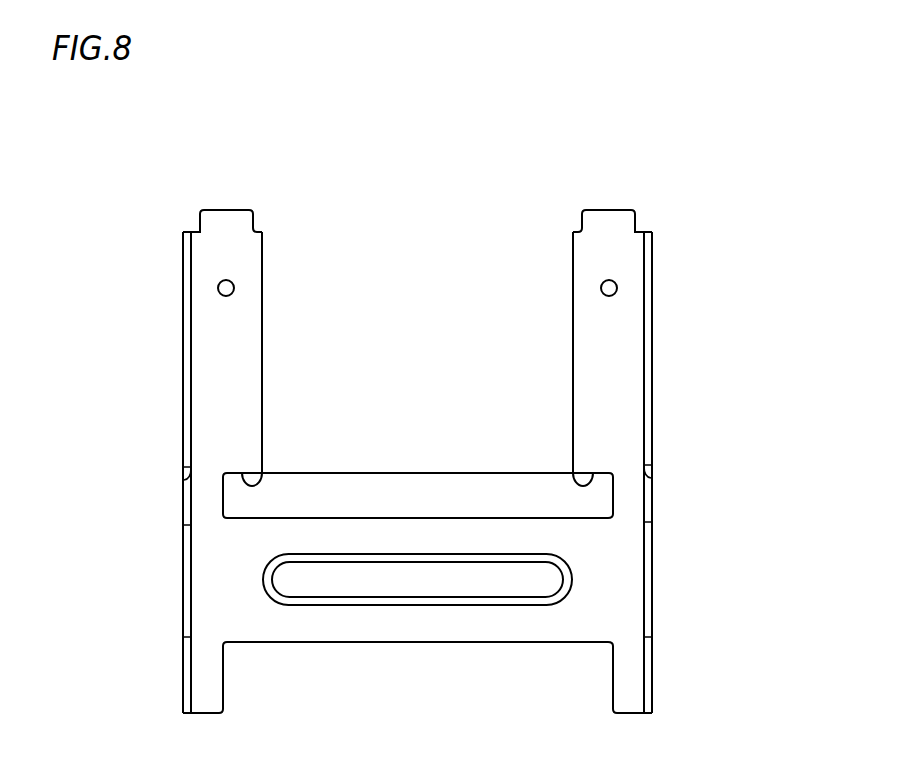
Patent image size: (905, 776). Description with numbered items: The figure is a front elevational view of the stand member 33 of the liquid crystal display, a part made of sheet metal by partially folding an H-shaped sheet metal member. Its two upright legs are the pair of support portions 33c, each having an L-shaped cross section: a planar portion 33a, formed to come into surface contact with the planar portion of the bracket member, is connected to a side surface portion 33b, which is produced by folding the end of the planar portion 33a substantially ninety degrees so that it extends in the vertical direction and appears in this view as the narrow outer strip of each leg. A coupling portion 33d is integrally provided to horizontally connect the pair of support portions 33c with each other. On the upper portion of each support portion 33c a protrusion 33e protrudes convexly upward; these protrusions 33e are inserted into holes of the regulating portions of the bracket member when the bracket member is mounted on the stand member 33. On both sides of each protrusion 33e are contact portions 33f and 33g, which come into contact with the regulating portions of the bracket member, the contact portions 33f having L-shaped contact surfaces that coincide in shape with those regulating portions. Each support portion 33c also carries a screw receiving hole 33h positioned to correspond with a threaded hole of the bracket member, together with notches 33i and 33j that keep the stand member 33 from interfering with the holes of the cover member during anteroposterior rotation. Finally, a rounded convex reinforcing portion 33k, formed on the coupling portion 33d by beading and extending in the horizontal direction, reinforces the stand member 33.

The stand member 33 is at (625, 117).
The planar portion 33a is at (245, 340).
The side surface portion 33b is at (185, 283).
The support portion 33c is at (183, 347).
The coupling portion 33d is at (440, 537).
The protrusion 33e is at (232, 210).
The contact portion 33f is at (192, 233).
The contact portion 33g is at (259, 229).
The screw receiving hole 33h is at (233, 284).
The notch 33i is at (262, 473).
The notch 33j is at (183, 480).
The reinforcing portion 33k is at (333, 577).